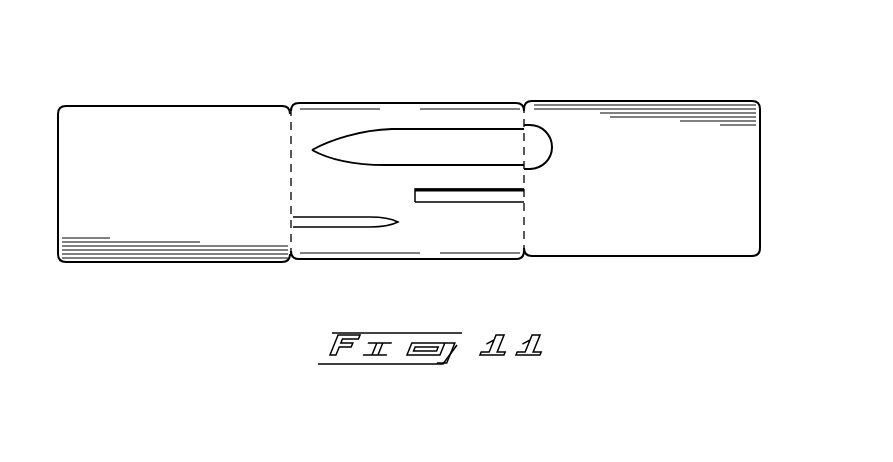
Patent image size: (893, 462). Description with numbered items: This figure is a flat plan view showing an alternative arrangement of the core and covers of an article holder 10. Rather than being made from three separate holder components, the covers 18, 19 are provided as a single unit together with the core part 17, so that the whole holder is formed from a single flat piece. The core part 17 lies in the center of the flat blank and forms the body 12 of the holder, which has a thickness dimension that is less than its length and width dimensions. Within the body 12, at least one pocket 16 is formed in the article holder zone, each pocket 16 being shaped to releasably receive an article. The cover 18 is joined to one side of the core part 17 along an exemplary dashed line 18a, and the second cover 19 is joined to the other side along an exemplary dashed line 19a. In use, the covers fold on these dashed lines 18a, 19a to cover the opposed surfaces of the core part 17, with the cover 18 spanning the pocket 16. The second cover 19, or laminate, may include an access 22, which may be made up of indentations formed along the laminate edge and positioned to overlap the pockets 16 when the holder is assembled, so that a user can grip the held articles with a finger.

The article holder 10 is at (454, 80).
The body 12 is at (405, 104).
The pocket 16 is at (423, 169).
The core part 17 is at (460, 244).
The cover 18 is at (183, 105).
The dashed line 18a is at (291, 175).
The second cover 19 is at (612, 100).
The dashed line 19a is at (524, 225).
The access 22 is at (547, 150).